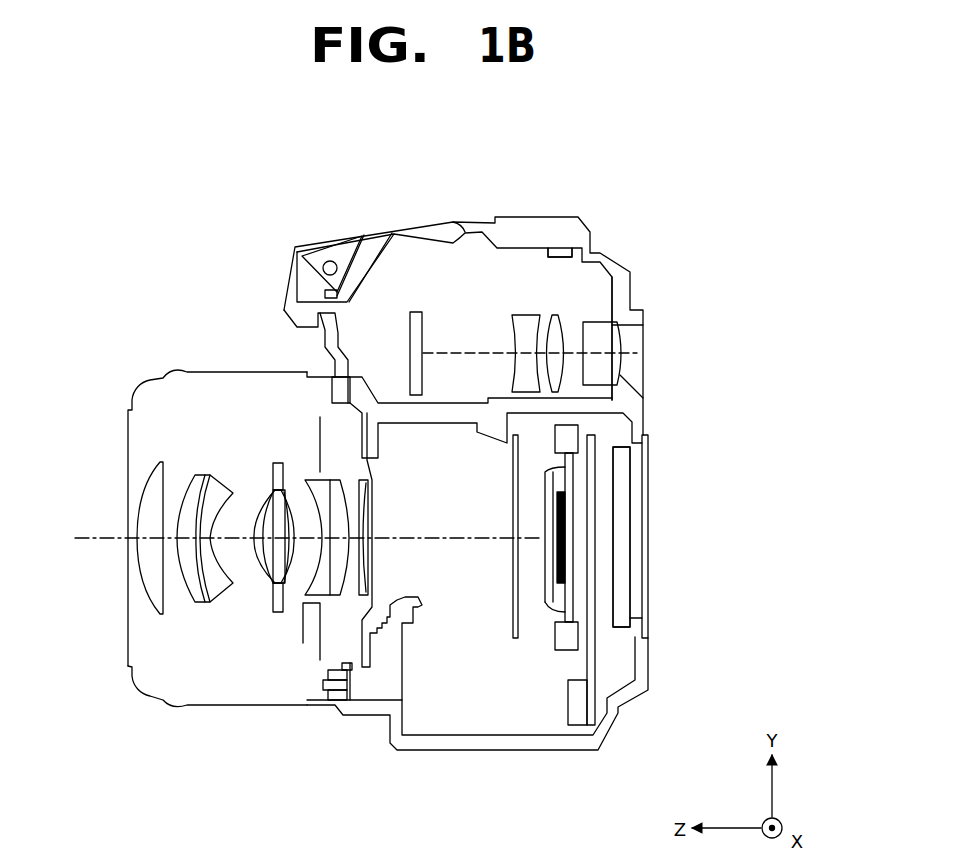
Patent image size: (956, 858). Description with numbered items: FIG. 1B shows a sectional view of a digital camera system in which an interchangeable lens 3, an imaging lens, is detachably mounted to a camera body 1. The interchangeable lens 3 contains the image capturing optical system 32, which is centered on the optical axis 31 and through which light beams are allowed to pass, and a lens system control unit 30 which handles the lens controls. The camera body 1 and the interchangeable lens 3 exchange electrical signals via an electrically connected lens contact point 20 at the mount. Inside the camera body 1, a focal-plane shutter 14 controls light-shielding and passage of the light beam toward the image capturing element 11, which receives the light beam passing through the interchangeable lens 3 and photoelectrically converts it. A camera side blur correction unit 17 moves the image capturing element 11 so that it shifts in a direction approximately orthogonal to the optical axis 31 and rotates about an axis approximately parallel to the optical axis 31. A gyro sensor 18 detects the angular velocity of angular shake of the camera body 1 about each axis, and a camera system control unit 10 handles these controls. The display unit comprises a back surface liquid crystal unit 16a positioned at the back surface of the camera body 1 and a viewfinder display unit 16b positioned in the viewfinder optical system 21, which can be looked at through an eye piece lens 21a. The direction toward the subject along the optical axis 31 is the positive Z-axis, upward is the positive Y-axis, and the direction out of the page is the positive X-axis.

The camera body 1 is at (641, 232).
The interchangeable lens 3 is at (137, 364).
The camera system control unit 10 is at (578, 717).
The image capturing element 11 is at (568, 512).
The focal-plane shutter 14 is at (515, 640).
The back surface liquid crystal unit 16a is at (625, 575).
The viewfinder display unit 16b is at (420, 311).
The camera side blur correction unit 17 is at (568, 436).
The gyro sensor 18 is at (563, 249).
The lens contact point 20 is at (330, 700).
The viewfinder optical system 21 is at (521, 299).
The eye piece lens 21a is at (603, 340).
The lens system control unit 30 is at (310, 640).
The optical axis 31 is at (98, 533).
The image capturing optical system 32 is at (197, 624).